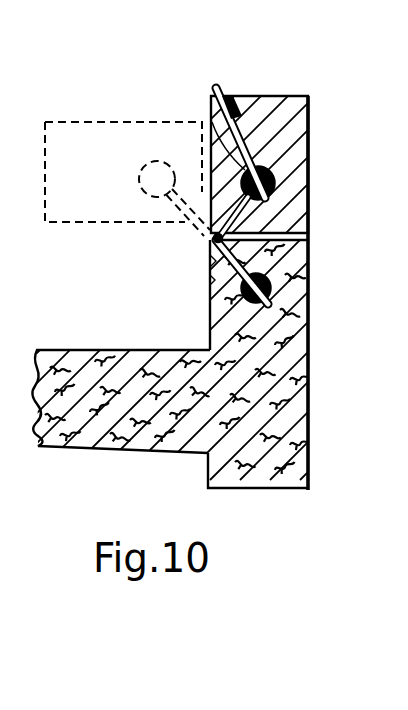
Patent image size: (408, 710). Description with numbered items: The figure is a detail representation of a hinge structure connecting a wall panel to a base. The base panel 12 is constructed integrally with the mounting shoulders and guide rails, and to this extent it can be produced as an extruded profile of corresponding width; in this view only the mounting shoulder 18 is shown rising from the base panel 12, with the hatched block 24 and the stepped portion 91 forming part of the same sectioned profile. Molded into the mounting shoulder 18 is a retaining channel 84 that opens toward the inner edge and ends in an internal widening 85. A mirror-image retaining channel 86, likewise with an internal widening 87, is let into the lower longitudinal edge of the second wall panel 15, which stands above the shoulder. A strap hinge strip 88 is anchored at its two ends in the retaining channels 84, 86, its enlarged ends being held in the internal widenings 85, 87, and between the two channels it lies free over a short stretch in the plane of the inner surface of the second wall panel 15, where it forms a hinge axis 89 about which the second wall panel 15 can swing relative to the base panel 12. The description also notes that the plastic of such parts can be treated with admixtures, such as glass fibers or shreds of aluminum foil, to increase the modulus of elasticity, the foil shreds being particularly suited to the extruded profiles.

The base panel 12 is at (84, 436).
The second wall panel 15 is at (251, 108).
The mounting shoulder 18 is at (310, 315).
The support block 24 is at (273, 472).
The retaining channel 84 is at (210, 302).
The internal widening 85 is at (210, 333).
The retaining channel 86 is at (210, 99).
The internal widening 87 is at (215, 97).
The strap hinge strip 88 is at (212, 277).
The hinge axis 89 is at (200, 239).
The step portion 91 is at (173, 436).